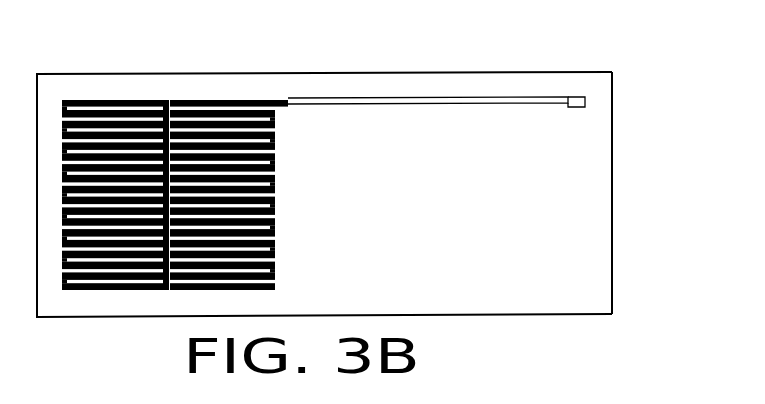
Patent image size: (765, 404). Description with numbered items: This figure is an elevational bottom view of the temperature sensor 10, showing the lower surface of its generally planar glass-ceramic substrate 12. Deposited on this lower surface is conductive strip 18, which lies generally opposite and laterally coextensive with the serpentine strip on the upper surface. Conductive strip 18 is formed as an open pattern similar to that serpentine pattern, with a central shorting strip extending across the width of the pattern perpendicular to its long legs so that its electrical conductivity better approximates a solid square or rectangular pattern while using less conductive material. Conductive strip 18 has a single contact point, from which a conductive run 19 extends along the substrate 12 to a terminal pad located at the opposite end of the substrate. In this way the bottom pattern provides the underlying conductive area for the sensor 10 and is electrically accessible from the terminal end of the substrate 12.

The temperature sensor 10 is at (273, 54).
The glass-ceramic substrate 12 is at (612, 199).
The conductive strip 18 is at (276, 164).
The conductive run 19 is at (413, 103).